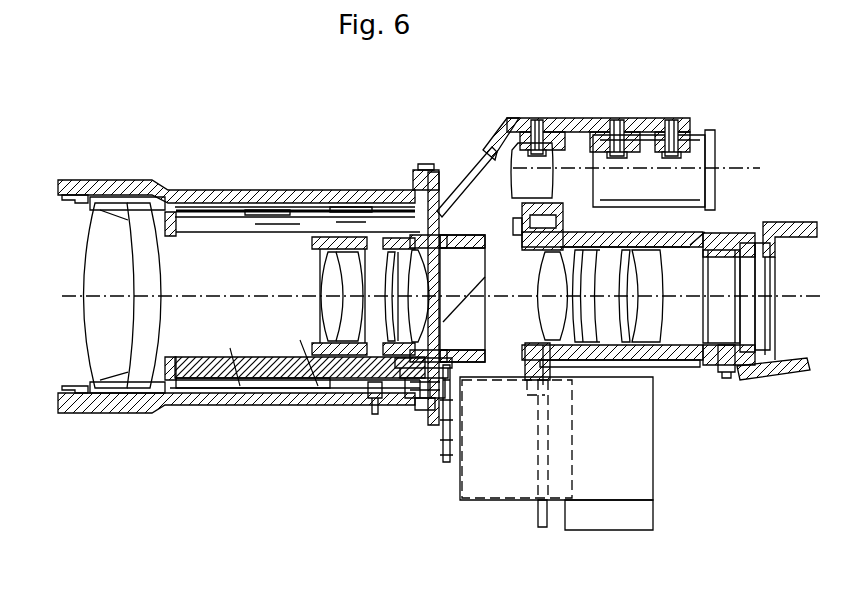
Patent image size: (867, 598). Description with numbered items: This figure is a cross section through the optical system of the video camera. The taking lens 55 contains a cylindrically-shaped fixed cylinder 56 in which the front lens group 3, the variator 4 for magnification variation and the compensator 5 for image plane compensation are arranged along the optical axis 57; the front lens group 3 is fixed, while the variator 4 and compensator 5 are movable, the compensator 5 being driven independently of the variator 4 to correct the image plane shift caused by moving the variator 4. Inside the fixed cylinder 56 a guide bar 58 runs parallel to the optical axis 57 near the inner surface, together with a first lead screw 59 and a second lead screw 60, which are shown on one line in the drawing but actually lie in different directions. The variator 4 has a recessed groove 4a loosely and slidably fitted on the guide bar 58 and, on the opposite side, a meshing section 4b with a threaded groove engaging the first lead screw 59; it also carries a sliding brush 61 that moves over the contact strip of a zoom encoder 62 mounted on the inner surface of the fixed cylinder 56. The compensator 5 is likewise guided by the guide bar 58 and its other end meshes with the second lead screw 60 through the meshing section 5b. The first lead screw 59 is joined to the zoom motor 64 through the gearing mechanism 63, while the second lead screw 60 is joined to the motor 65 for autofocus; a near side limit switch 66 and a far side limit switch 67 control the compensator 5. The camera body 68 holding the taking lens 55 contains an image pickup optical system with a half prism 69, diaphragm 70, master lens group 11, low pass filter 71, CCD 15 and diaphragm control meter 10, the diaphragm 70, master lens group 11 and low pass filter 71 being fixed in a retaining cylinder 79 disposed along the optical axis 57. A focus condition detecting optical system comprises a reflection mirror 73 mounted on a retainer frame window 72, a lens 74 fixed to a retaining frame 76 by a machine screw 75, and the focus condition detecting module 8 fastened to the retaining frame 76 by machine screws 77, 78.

The front lens group 3 is at (110, 367).
The variator 4 is at (313, 240).
The recessed groove 4a is at (317, 233).
The meshing section 4b is at (312, 353).
The compensator 5 is at (405, 193).
The meshing section 5b is at (398, 403).
The focus condition detecting module 8 is at (652, 152).
The diaphragm control meter 10 is at (601, 522).
The master lens group 11 is at (663, 367).
The CCD 15 is at (802, 373).
The taking lens 55 is at (180, 188).
The fixed cylinder 56 is at (193, 190).
The optical axis 57 is at (222, 295).
The guide bar 58 is at (217, 223).
The first lead screw 59 is at (293, 377).
The second lead screw 60 is at (213, 378).
The sliding brush 61 is at (350, 204).
The zoom encoder 62 is at (257, 210).
The gearing mechanism 63 is at (450, 462).
The zoom motor 64 is at (645, 482).
The motor for AF 65 is at (483, 490).
The near side limit switch 66 is at (368, 408).
The far side limit switch 67 is at (420, 405).
The camera body 68 is at (628, 115).
The half prism 69 is at (487, 340).
The diaphragm 70 is at (541, 385).
The low pass filter 71 is at (732, 343).
The retainer frame window 72 is at (489, 150).
The reflection mirror 73 is at (462, 162).
The lens 74 is at (564, 156).
The machine screw 75 is at (532, 122).
The retaining frame 76 is at (589, 130).
The machine screw 77 is at (613, 120).
The machine screw 78 is at (672, 147).
The retaining cylinder 79 is at (707, 229).